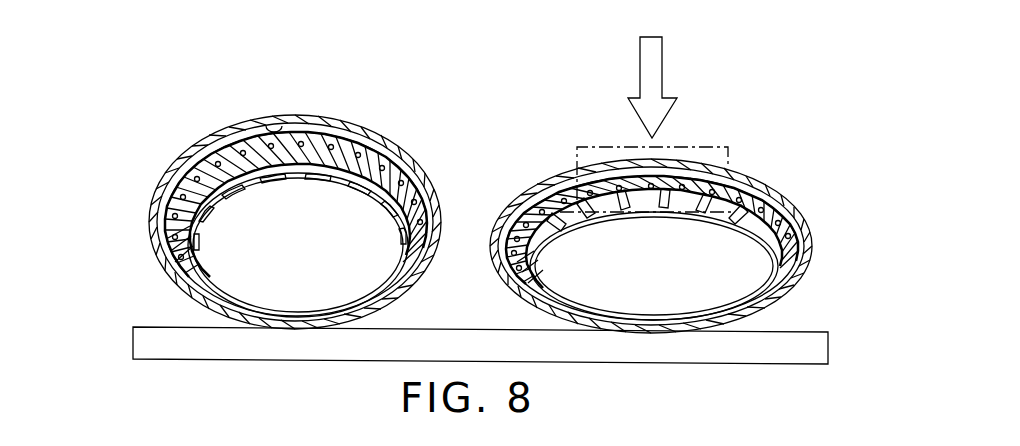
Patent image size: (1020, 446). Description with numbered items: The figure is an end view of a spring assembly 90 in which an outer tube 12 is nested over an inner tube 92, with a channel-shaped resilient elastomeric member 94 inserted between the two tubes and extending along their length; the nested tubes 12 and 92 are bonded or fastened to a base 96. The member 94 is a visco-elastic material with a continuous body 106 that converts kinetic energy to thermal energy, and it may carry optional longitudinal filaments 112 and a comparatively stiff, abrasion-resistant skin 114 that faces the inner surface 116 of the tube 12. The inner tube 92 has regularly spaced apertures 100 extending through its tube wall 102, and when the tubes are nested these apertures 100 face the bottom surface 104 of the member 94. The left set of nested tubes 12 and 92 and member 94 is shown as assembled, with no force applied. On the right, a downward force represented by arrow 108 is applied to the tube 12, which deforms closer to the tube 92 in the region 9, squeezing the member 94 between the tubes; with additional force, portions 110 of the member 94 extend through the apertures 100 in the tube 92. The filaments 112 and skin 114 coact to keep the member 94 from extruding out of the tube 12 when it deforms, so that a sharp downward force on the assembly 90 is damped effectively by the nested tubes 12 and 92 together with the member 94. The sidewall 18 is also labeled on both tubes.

The region 9 is at (728, 147).
The tube 12 is at (181, 152).
The sidewall 18 is at (170, 177).
The assembly 90 is at (477, 130).
The tube 92 is at (383, 272).
The resilient elastomeric member 94 is at (224, 162).
The base 96 is at (153, 327).
The apertures 100 is at (214, 202).
The tube wall 102 is at (322, 181).
The bottom surface 104 is at (339, 180).
The continuous body 106 is at (176, 218).
The arrow 108 is at (657, 62).
The portions 110 is at (655, 200).
The filaments 112 is at (310, 132).
The skin 114 is at (370, 146).
The inner surface 116 is at (266, 122).